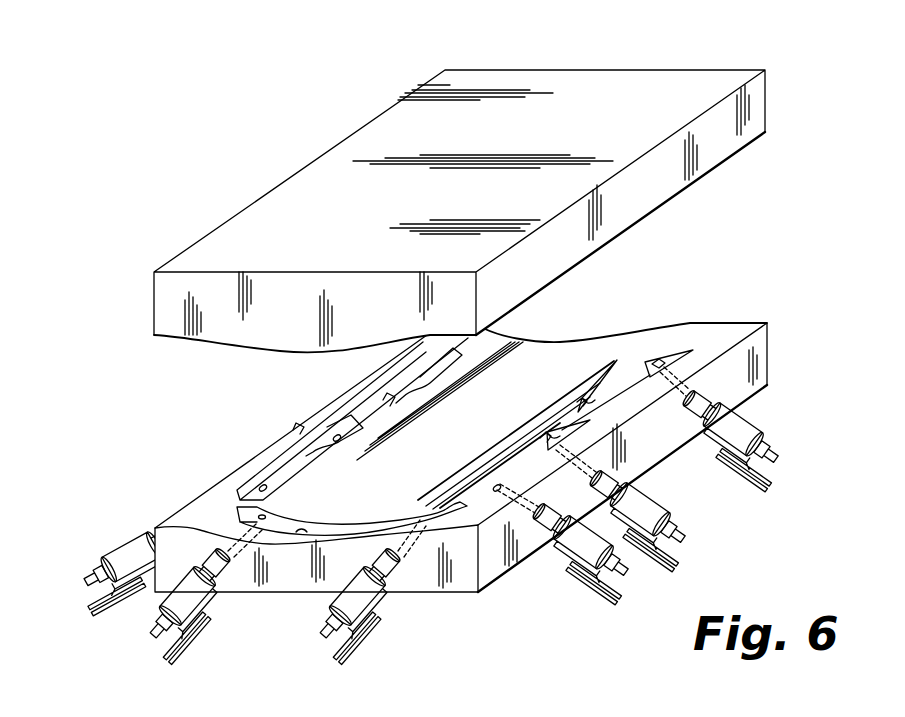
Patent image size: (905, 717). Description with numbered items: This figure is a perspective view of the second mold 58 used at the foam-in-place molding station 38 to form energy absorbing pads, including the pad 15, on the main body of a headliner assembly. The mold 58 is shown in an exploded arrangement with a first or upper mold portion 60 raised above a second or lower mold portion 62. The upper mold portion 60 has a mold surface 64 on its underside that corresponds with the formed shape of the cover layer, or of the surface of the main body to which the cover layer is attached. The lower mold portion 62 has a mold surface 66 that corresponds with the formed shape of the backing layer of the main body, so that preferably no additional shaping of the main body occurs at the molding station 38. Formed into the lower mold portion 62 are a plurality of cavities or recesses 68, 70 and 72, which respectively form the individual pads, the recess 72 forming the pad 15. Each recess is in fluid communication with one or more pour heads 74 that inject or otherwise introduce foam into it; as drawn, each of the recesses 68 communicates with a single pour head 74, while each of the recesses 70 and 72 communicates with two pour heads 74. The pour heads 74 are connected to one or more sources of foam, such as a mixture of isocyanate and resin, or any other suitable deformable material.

The pad 15 is at (455, 0).
The foam-in-place molding station 38 is at (822, 74).
The second mold 58 is at (128, 297).
The upper mold portion 60 is at (277, 185).
The lower mold portion 62 is at (106, 567).
The mold surface 64 is at (248, 350).
The mold surface 66 is at (573, 340).
The recesses 68 is at (418, 380).
The recess 70 is at (265, 488).
The recess 72 is at (275, 525).
The pour heads 74 is at (198, 493).